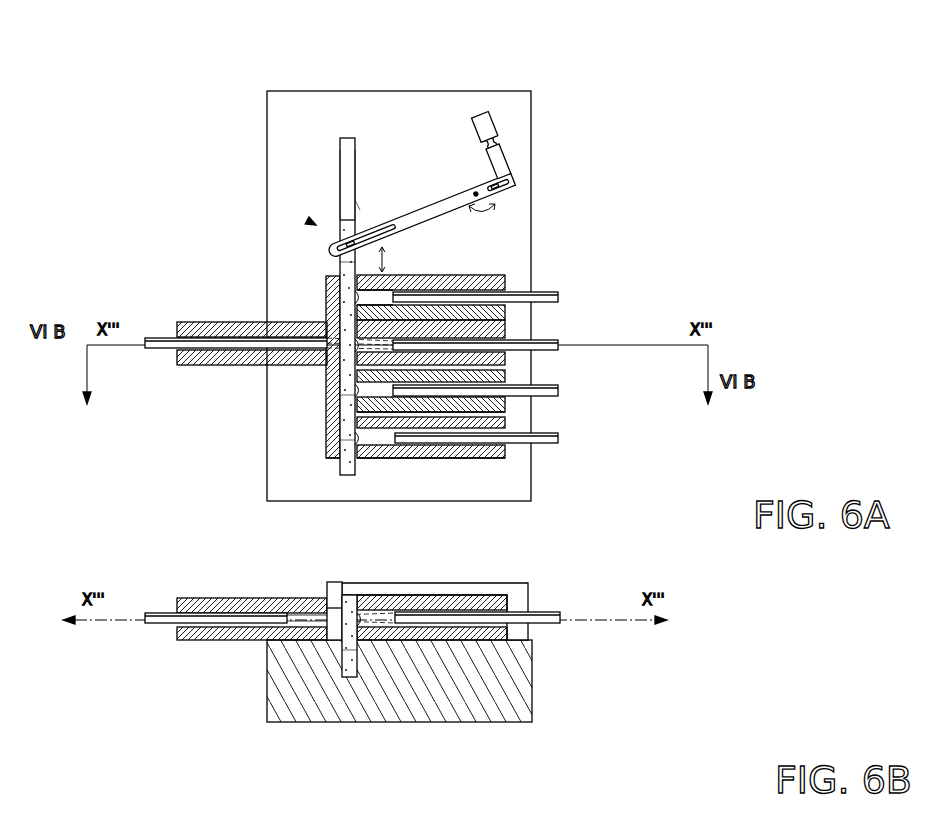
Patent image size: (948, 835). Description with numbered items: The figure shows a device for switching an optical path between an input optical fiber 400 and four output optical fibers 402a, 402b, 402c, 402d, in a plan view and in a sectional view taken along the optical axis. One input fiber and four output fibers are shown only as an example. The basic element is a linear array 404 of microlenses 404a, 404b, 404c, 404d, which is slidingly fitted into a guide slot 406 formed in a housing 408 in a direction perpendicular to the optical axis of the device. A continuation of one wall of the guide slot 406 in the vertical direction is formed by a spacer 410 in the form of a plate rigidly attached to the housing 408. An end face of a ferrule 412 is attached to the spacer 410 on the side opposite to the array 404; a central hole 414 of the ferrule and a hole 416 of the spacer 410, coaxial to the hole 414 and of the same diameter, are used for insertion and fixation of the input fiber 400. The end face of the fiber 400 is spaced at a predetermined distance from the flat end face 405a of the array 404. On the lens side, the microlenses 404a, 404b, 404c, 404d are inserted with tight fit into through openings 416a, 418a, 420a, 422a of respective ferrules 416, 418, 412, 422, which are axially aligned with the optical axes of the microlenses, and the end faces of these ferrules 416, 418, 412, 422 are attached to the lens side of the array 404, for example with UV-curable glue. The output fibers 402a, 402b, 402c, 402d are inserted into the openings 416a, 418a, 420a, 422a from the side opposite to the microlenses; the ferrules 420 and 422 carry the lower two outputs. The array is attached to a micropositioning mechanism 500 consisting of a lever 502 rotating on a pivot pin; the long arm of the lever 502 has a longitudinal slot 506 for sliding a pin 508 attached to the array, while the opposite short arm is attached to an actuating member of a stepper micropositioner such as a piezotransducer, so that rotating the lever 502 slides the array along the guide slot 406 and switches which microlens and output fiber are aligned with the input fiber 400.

In FIG. 6A, the input optical fiber 400 is at (155, 338).
In FIG. 6A, the output optical fiber 402a is at (540, 293).
In FIG. 6A, the output optical fiber 402b is at (507, 335).
In FIG. 6A, the output optical fiber 402c is at (507, 380).
In FIG. 6A, the output optical fiber 402d is at (507, 425).
In FIG. 6A, the linear array of microlenses 404 is at (340, 225).
In FIG. 6B, the linear array of microlenses 404 is at (356, 662).
In FIG. 6A, the microlens 404a is at (340, 242).
In FIG. 6A, the microlens 404b is at (340, 262).
In FIG. 6A, the microlens 404c is at (340, 395).
In FIG. 6A, the microlens 404d is at (340, 440).
In FIG. 6A, the flat end face of the array 405a is at (313, 223).
In FIG. 6A, the guide slot 406 is at (336, 218).
In FIG. 6B, the guide slot 406 is at (337, 657).
In FIG. 6A, the housing 408 is at (318, 90).
In FIG. 6B, the housing 408 is at (532, 694).
In FIG. 6A, the spacer 410 is at (326, 458).
In FIG. 6B, the spacer 410 is at (325, 583).
In FIG. 6A, the ferrule 412 is at (172, 355).
In FIG. 6B, the ferrule 412 is at (176, 604).
In FIG. 6A, the central hole of the ferrule 414 is at (328, 300).
In FIG. 6A, the hole of the spacer 416 is at (340, 285).
In FIG. 6B, the hole of the spacer 416 is at (340, 607).
In FIG. 6A, the through opening of ferrule 416a is at (357, 290).
In FIG. 6A, the ferrule 418 is at (507, 322).
In FIG. 6A, the through opening of ferrule 418a is at (396, 296).
In FIG. 6A, the ferrule 420 is at (507, 400).
In FIG. 6A, the through opening of ferrule 420a is at (480, 458).
In FIG. 6A, the ferrule 422 is at (507, 452).
In FIG. 6A, the through opening of ferrule 422a is at (410, 460).
In FIG. 6A, the micropositioning mechanism 500 is at (410, 143).
In FIG. 6A, the lever 502 is at (410, 143).
In FIG. 6A, the longitudinal slot 506 is at (355, 205).
In FIG. 6A, the pin 508 is at (340, 180).